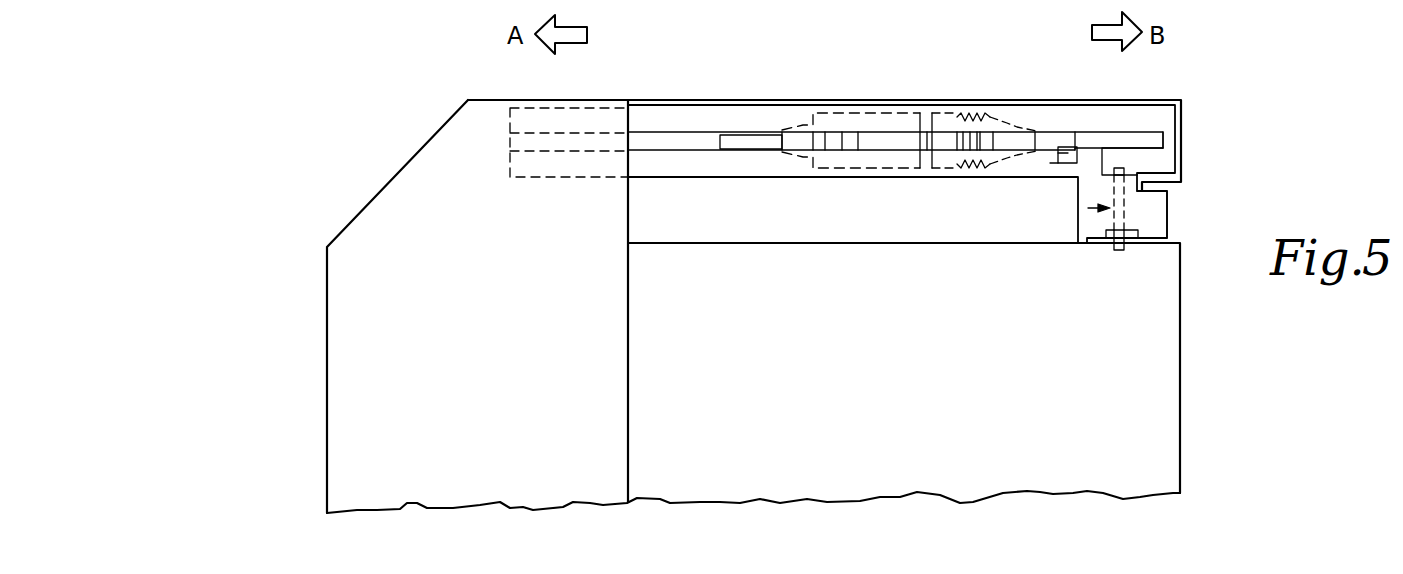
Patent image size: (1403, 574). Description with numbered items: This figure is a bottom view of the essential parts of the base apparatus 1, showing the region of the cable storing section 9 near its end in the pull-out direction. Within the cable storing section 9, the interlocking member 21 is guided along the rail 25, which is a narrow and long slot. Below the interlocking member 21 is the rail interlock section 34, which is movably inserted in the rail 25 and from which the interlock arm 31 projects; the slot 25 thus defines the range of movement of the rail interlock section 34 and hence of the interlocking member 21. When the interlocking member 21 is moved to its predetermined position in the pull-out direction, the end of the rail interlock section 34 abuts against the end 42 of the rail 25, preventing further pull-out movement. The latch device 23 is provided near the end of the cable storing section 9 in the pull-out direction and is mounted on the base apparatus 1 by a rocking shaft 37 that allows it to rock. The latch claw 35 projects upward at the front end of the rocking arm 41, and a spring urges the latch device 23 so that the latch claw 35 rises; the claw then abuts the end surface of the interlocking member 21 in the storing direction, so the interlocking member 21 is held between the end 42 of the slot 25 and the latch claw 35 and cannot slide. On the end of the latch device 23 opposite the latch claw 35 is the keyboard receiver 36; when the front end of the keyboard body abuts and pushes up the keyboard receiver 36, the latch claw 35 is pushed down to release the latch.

The base apparatus 1 is at (416, 157).
The cable storing section 9 is at (558, 178).
The rail 25 is at (672, 140).
The interlock arm 31 is at (850, 140).
The interlocking member 21 is at (890, 118).
The rail interlock section 34 is at (910, 140).
The latch claw 35 is at (1056, 163).
The rocking arm 41 is at (1085, 163).
The end of the rail 42 is at (1163, 133).
The keyboard receiver 36 is at (1153, 212).
The rocking shaft 37 is at (1119, 250).
The latch device 23 is at (1088, 208).